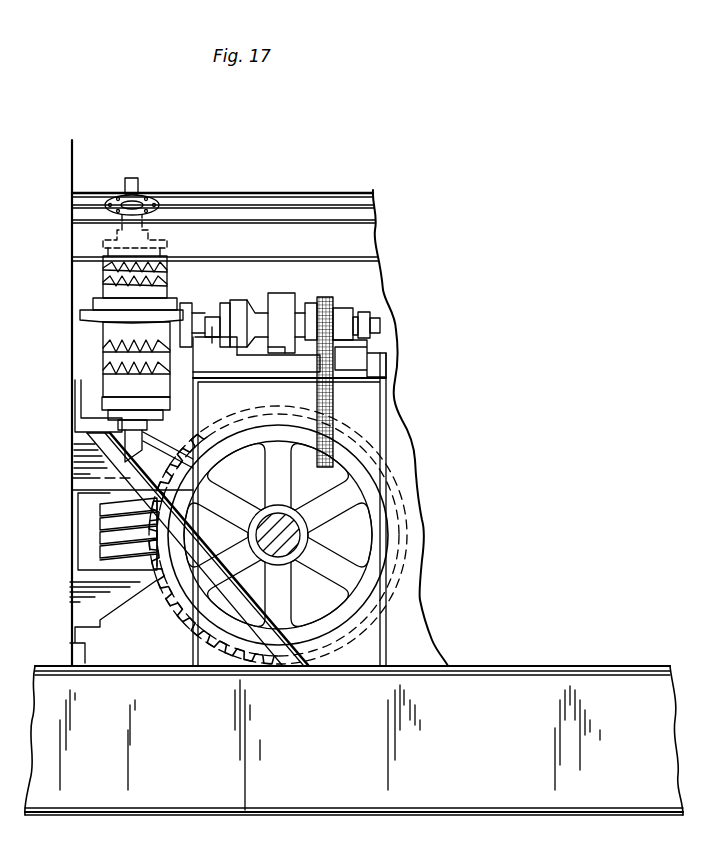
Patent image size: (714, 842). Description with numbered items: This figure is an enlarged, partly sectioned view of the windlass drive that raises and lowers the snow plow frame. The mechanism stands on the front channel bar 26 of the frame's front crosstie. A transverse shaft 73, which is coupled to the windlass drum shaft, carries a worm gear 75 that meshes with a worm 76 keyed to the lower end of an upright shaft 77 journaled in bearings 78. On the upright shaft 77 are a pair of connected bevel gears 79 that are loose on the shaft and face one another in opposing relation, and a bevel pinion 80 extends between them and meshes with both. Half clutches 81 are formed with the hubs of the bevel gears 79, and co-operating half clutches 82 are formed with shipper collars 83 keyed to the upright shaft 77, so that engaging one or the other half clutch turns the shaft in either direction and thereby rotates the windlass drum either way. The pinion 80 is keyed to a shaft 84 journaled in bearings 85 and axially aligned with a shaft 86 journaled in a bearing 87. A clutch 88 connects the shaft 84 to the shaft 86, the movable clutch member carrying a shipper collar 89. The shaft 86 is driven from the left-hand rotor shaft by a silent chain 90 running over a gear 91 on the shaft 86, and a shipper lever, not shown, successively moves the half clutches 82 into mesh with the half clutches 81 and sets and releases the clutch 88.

The front channel bar 26 is at (354, 740).
The transverse shaft 73 is at (277, 537).
The worm gear 75 is at (313, 628).
The worm 76 is at (117, 531).
The upright shaft 77 is at (143, 437).
The bearings 78 is at (122, 597).
The bevel gears 79 is at (113, 310).
The bevel pinion 80 is at (178, 322).
The half clutches 81 is at (110, 360).
The half clutches 82 is at (110, 388).
The shipper collars 83 is at (160, 402).
The shaft 84 is at (214, 341).
The bearings 85 is at (232, 371).
The shaft 86 is at (358, 310).
The bearing 87 is at (275, 298).
The clutch 88 is at (240, 314).
The shipper collar 89 is at (227, 303).
The silent chain 90 is at (317, 395).
The gear 91 is at (349, 299).